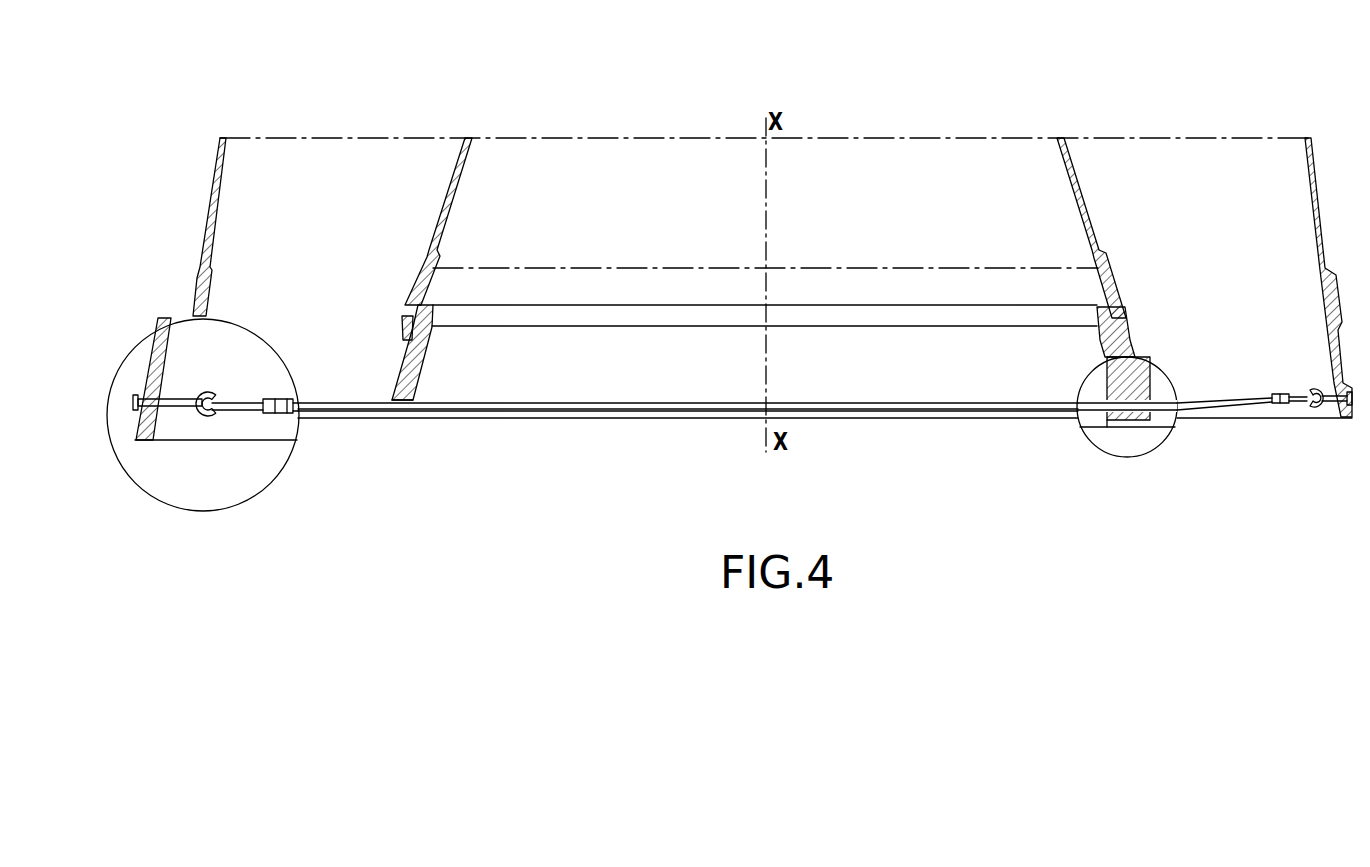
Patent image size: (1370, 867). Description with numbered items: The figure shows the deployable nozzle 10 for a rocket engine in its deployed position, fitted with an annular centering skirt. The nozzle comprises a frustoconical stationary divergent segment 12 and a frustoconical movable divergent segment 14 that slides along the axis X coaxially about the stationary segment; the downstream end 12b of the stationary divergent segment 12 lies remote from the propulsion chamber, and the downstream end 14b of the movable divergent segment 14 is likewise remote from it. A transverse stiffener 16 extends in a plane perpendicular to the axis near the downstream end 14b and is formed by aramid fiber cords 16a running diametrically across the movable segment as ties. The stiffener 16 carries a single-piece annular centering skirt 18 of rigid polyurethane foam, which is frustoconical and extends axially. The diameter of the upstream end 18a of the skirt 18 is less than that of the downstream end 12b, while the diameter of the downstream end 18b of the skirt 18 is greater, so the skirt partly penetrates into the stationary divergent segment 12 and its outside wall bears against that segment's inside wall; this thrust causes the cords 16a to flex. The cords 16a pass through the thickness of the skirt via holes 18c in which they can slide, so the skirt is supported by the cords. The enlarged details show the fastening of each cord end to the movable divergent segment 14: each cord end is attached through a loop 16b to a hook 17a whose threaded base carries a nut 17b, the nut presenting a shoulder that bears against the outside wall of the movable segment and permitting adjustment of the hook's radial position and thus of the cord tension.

The deployable nozzle 10 is at (460, 108).
The stationary divergent segment 12 is at (440, 226).
The downstream end of the stationary divergent segment 12b is at (400, 330).
The movable divergent segment 14 is at (215, 168).
The downstream end of the movable divergent segment 14b is at (135, 430).
The transverse stiffener 16 is at (1238, 412).
The aramid fiber cord 16a is at (343, 411).
The loop 16b is at (240, 412).
The hook 17a is at (178, 402).
The nut 17b is at (148, 386).
The annular centering skirt 18 is at (398, 371).
The upstream end of the skirt 18a is at (435, 305).
The downstream end of the skirt 18b is at (403, 414).
The hole 18c is at (1112, 410).